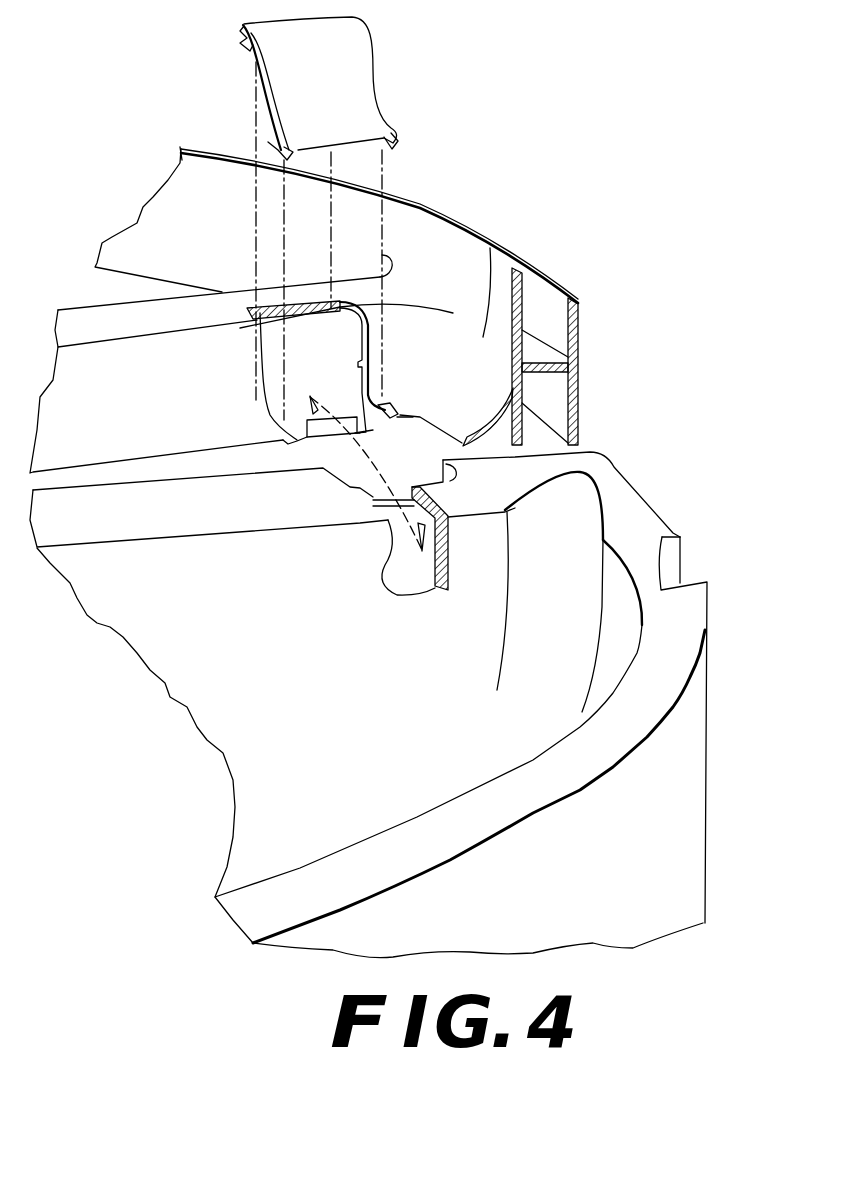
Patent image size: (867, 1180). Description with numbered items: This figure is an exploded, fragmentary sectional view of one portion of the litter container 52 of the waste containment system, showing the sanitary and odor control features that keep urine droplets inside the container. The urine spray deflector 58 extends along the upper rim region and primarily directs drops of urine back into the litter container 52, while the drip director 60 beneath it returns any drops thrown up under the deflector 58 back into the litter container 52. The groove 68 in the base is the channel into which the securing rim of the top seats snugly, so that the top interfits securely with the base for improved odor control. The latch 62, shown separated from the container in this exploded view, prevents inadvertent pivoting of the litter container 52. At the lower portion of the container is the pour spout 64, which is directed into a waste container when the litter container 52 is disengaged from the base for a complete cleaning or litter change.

The litter container 52 is at (655, 697).
The urine spray deflector 58 is at (493, 244).
The drip director 60 is at (455, 422).
The latch 62 is at (337, 370).
The pour spout 64 is at (583, 503).
The groove 68 is at (547, 312).